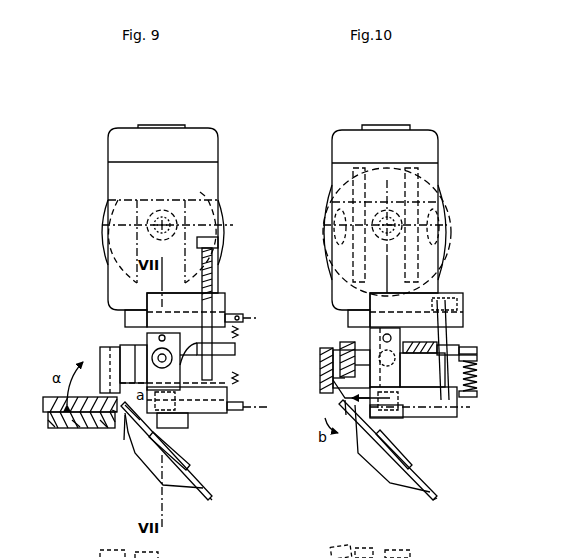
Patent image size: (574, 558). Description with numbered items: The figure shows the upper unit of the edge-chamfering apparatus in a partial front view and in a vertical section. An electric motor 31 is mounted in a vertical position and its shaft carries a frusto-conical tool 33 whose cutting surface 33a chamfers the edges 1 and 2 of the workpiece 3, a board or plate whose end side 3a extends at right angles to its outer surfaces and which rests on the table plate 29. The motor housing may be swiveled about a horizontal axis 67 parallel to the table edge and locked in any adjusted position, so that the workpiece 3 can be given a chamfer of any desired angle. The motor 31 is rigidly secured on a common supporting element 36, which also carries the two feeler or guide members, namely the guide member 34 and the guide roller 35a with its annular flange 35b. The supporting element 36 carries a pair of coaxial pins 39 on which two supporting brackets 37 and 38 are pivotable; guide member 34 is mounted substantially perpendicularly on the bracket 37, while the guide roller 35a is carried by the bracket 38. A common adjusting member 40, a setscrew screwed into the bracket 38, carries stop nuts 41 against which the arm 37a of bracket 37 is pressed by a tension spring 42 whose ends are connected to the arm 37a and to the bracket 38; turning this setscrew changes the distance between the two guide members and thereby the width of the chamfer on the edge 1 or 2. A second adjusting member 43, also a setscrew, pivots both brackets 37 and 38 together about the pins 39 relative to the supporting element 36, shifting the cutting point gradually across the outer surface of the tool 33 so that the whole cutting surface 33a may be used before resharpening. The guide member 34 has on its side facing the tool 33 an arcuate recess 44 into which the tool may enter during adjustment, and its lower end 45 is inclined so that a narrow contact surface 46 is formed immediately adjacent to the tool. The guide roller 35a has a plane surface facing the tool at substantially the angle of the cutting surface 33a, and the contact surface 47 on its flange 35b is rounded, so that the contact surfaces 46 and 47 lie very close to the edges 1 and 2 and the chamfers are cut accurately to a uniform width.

In FIG. 9, the edge 1 is at (135, 364).
In FIG. 9, the edge 2 is at (117, 428).
In FIG. 9, the workpiece 3 is at (43, 400).
In FIG. 9, the end side 3a is at (124, 440).
In FIG. 9, the table plate 29 is at (55, 428).
In FIG. 9, the electric motor 31 is at (212, 148).
In FIG. 10, the electric motor 31 is at (432, 152).
In FIG. 9, the frusto-conical tool 33 is at (205, 407).
In FIG. 10, the frusto-conical tool 33 is at (413, 420).
In FIG. 10, the cutting surface 33a is at (346, 415).
In FIG. 9, the guide member 34 is at (100, 352).
In FIG. 10, the guide member 34 is at (320, 370).
In FIG. 9, the guide roller 35a is at (155, 458).
In FIG. 10, the guide roller 35a is at (385, 470).
In FIG. 9, the annular flange 35b is at (208, 488).
In FIG. 10, the annular flange 35b is at (437, 500).
In FIG. 9, the supporting element 36 is at (185, 305).
In FIG. 10, the supporting element 36 is at (415, 305).
In FIG. 9, the supporting bracket 37 is at (125, 350).
In FIG. 10, the supporting bracket 37 is at (345, 345).
In FIG. 9, the arm 37a is at (235, 350).
In FIG. 10, the arm 37a is at (455, 345).
In FIG. 9, the supporting bracket 38 is at (203, 416).
In FIG. 10, the supporting bracket 38 is at (452, 417).
In FIG. 9, the coaxial pins 39 is at (160, 356).
In FIG. 10, the coaxial pins 39 is at (410, 352).
In FIG. 10, the adjusting member 40 is at (447, 330).
In FIG. 10, the stop nuts 41 is at (462, 362).
In FIG. 10, the tension spring 42 is at (475, 378).
In FIG. 9, the second adjusting member 43 is at (208, 278).
In FIG. 10, the arcuate recess 44 is at (336, 395).
In FIG. 9, the lower end 45 is at (80, 428).
In FIG. 9, the contact surface 46 is at (107, 428).
In FIG. 9, the contact surface 47 is at (212, 500).
In FIG. 9, the horizontal axis 67 is at (190, 186).